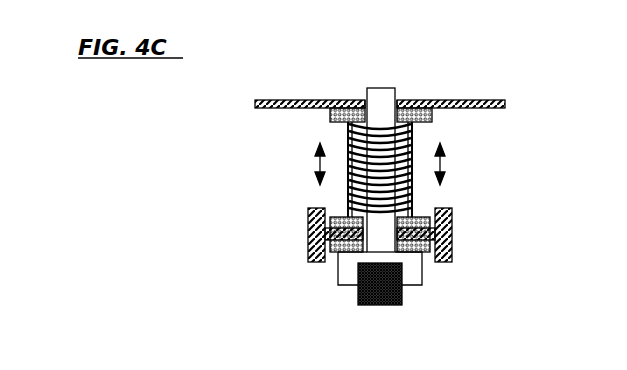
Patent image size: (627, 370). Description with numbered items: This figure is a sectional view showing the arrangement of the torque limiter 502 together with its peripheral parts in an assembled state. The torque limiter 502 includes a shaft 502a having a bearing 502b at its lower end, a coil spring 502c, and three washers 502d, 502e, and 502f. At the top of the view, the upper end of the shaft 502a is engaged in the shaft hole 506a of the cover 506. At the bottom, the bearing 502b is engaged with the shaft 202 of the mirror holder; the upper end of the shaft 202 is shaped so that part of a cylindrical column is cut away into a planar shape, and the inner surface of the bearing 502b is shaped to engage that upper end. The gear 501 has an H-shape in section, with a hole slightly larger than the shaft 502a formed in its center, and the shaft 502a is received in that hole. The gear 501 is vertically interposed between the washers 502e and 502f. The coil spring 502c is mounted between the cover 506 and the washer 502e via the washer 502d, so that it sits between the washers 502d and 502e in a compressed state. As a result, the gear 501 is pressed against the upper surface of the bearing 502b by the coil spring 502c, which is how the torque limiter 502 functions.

The cover 506 is at (485, 99).
The shaft hole 506a is at (363, 97).
The shaft 502a is at (382, 92).
The coil spring 502c is at (348, 142).
The washer 502d is at (432, 122).
The washer 502e is at (347, 218).
The torque limiter 502 is at (468, 182).
The gear 501 is at (453, 250).
The washer 502f is at (340, 252).
The bearing 502b is at (412, 282).
The shaft 202 is at (378, 307).